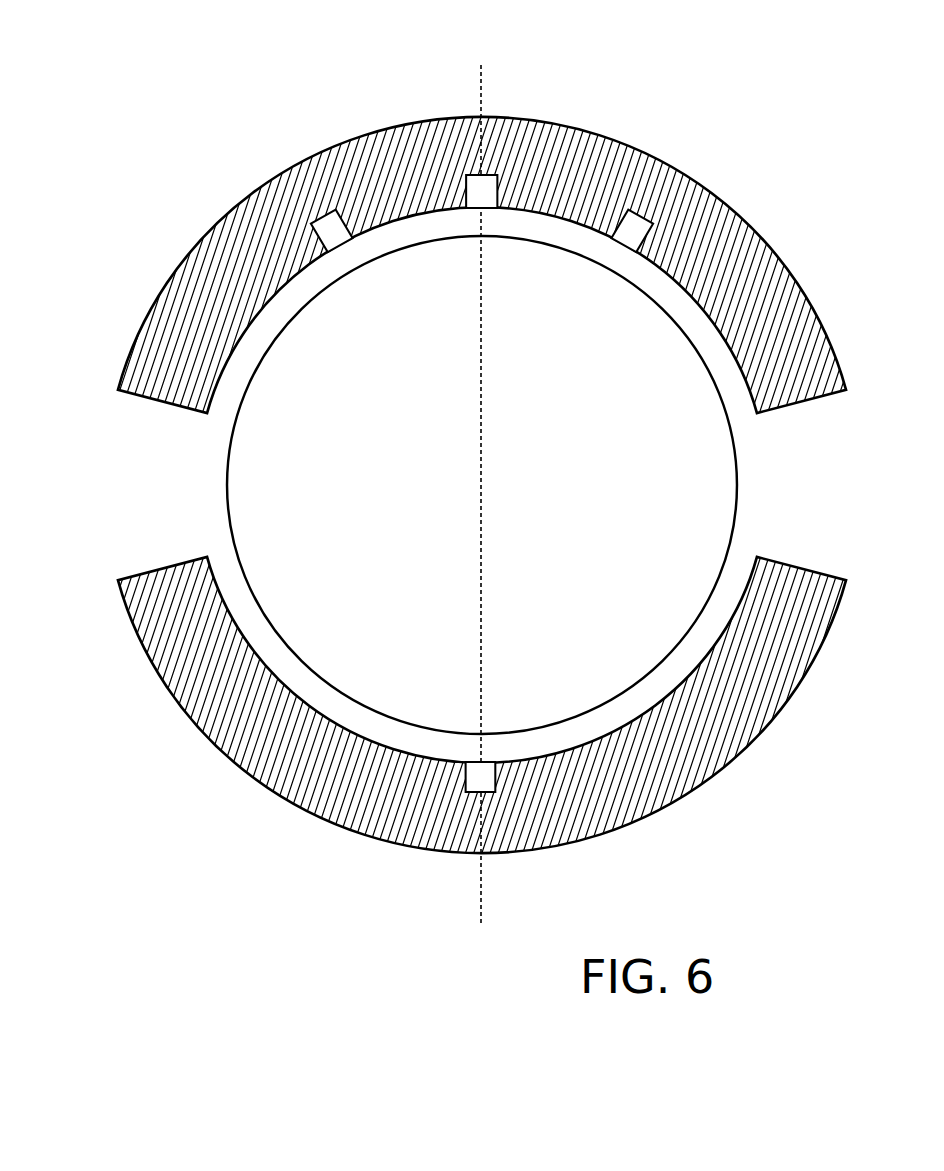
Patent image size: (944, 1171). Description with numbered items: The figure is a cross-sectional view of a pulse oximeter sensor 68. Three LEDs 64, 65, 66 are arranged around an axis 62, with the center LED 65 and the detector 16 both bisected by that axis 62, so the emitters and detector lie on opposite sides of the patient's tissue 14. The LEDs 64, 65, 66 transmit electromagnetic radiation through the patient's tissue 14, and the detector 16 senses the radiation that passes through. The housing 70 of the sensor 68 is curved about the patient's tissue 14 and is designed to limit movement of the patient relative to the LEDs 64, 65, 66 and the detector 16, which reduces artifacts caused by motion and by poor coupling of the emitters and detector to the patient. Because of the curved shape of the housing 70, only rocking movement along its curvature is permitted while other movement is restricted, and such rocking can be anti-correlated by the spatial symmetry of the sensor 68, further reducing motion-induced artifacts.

The patient's tissue 14 is at (735, 497).
The detector 16 is at (490, 762).
The axis 62 is at (484, 90).
The LED 64 is at (333, 242).
The center LED 65 is at (490, 207).
The LED 66 is at (637, 242).
The sensor 68 is at (190, 79).
The housing 70 is at (118, 393).